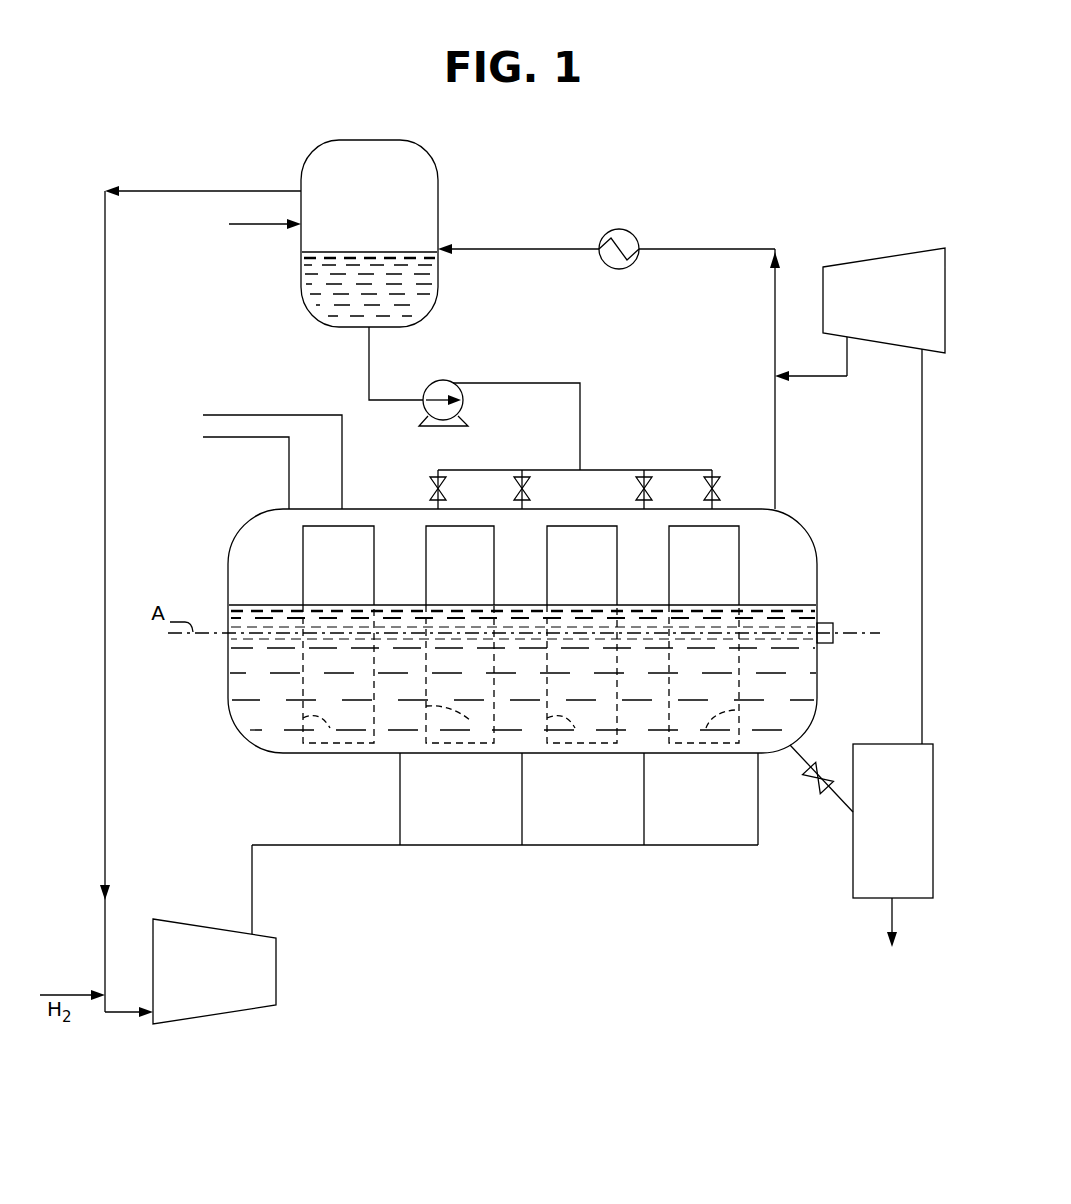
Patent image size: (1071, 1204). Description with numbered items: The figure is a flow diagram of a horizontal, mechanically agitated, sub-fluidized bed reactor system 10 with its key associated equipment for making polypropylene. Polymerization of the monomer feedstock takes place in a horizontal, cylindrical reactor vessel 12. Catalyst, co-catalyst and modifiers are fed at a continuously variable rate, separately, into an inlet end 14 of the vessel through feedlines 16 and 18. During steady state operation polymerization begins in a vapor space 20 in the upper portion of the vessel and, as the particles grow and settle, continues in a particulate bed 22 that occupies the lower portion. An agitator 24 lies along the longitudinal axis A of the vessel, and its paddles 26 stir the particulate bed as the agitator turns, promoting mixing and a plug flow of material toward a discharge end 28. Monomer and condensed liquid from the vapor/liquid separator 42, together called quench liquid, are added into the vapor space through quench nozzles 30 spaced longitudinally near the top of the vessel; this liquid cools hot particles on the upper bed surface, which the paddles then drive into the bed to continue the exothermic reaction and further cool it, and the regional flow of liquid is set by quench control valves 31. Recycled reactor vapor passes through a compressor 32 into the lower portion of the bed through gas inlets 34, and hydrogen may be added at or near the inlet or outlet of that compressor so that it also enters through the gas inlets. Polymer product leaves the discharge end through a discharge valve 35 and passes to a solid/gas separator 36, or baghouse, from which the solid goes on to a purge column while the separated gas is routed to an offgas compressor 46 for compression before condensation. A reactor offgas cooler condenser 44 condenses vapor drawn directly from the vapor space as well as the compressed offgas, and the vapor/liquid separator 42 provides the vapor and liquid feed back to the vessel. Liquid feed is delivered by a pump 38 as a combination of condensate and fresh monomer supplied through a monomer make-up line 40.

The sub-fluidized bed reactor system 10 is at (710, 127).
The reactor vessel 12 is at (817, 553).
The inlet end 14 is at (207, 547).
The feedline 16 is at (238, 410).
The feedline 18 is at (237, 440).
The vapor space 20 is at (258, 548).
The particulate bed 22 is at (270, 752).
The agitator 24 is at (824, 621).
The paddles 26 is at (433, 558).
The discharge end 28 is at (830, 700).
The quench nozzles 30 is at (438, 509).
The quench control valves 31 is at (514, 490).
The compressor 32 is at (276, 970).
The gas inlets 34 is at (519, 826).
The discharge valve 35 is at (815, 788).
The solid/gas separator 36 is at (853, 867).
The pump 38 is at (434, 380).
The monomer make-up line 40 is at (262, 229).
The vapor/liquid separator 42 is at (331, 140).
The reactor offgas cooler condenser 44 is at (600, 199).
The offgas compressor 46 is at (868, 256).